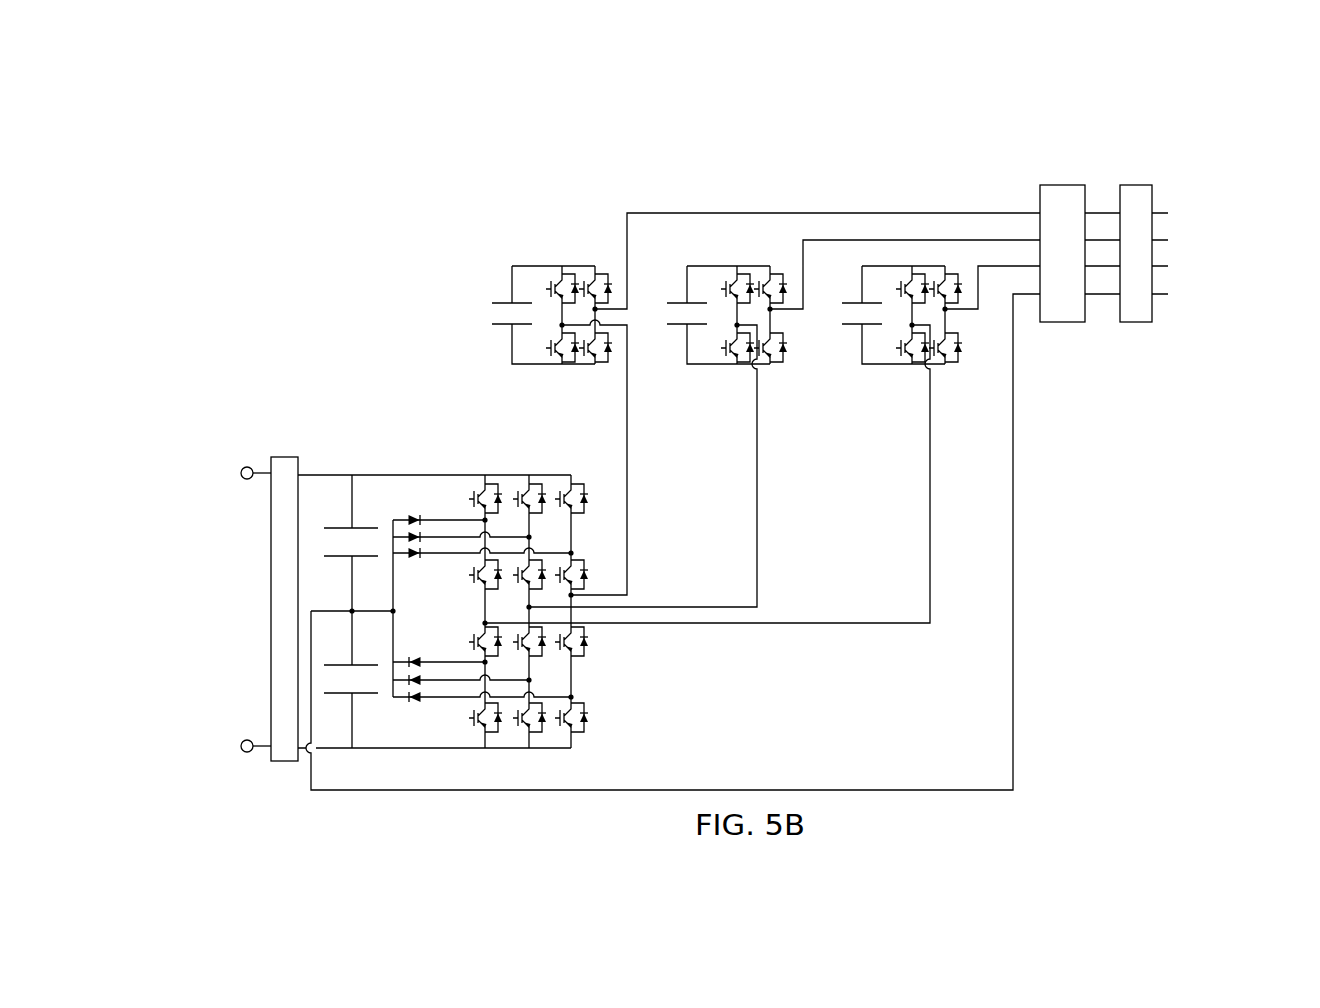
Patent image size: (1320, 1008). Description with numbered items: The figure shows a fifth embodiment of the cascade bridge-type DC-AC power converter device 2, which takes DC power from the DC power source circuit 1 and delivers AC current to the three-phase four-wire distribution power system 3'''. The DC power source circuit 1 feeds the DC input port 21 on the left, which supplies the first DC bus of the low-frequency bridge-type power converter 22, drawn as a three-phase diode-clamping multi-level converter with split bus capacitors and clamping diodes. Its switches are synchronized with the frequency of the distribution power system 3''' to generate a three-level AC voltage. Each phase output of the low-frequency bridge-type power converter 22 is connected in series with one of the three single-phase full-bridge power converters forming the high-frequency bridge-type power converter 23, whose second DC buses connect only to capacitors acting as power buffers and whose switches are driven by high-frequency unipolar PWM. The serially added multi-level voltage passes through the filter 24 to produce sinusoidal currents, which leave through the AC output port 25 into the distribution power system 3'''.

The DC power source circuit 1 is at (192, 552).
The cascade bridge-type DC-AC power converter device 2 is at (834, 176).
The DC input port 21 is at (285, 456).
The low-frequency bridge-type power converter 22 is at (500, 473).
The high-frequency bridge-type power converter 23 is at (548, 265).
The filter 24 is at (1062, 183).
The AC output port 25 is at (1135, 183).
The three-phase four-wire distribution power system 3''' is at (1226, 201).